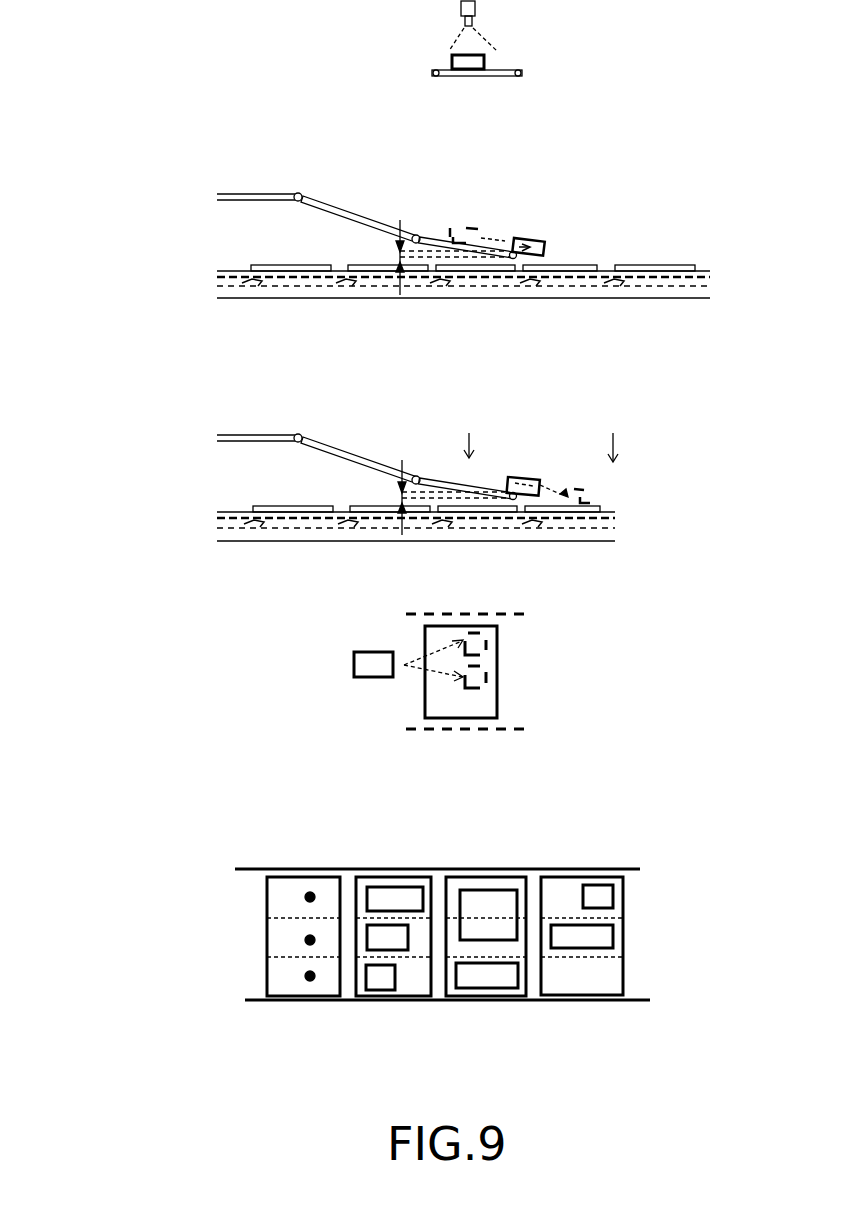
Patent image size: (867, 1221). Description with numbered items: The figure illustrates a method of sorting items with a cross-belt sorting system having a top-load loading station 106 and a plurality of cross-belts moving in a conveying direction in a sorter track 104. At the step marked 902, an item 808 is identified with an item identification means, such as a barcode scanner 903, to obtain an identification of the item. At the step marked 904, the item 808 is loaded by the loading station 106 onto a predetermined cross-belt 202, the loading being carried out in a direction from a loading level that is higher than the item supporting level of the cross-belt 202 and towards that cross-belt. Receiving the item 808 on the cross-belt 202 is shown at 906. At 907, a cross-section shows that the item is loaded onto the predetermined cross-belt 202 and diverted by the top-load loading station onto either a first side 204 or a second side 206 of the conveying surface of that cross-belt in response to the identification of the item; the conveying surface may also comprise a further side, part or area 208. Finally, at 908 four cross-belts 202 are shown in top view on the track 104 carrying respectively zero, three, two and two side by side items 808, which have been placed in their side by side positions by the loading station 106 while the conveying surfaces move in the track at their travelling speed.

The item identification step 902 is at (181, 20).
The barcode scanner 903 is at (461, 13).
The item 808 is at (488, 60).
The loading station 106 is at (231, 161).
The item loading step 904 is at (171, 237).
The item receiving step 906 is at (174, 478).
The cross-belt 202 is at (600, 508).
The diverting step 907 is at (149, 672).
The first side 204 is at (310, 896).
The second side 206 is at (235, 925).
The further side 208 is at (308, 976).
The top view of cross-belts 908 is at (164, 907).
The track 104 is at (583, 868).